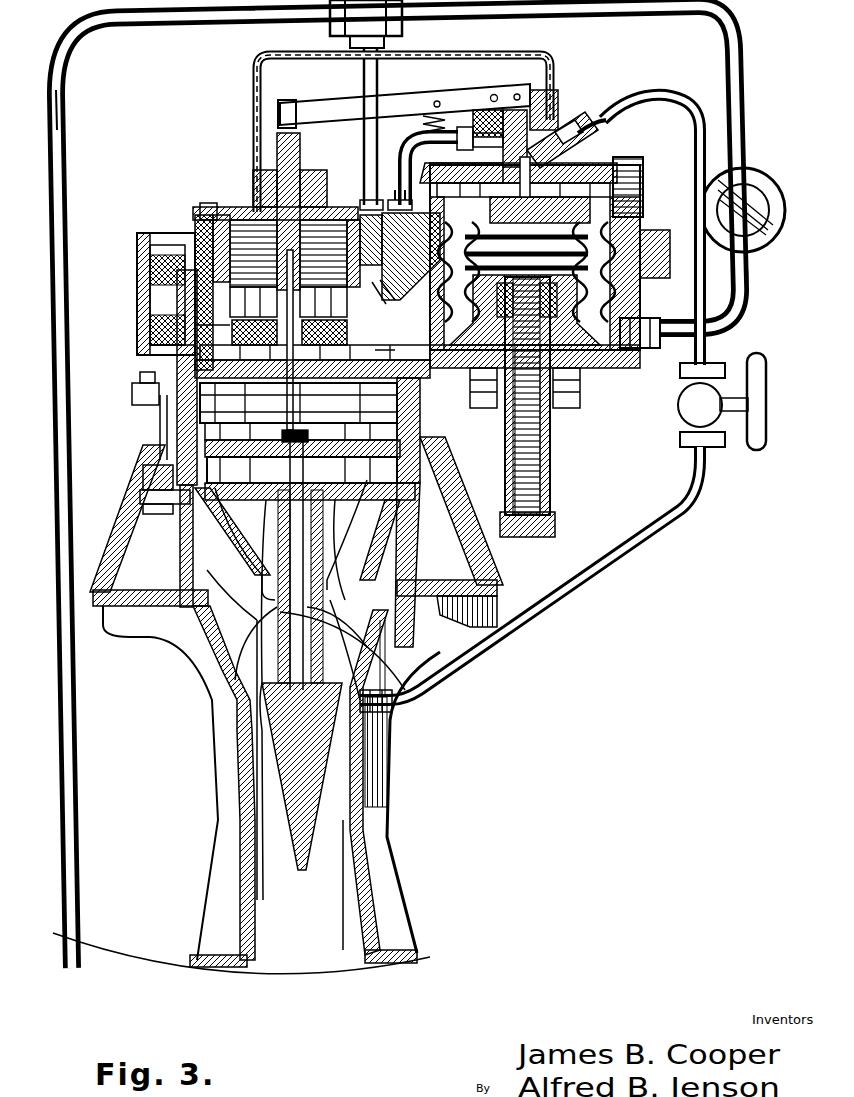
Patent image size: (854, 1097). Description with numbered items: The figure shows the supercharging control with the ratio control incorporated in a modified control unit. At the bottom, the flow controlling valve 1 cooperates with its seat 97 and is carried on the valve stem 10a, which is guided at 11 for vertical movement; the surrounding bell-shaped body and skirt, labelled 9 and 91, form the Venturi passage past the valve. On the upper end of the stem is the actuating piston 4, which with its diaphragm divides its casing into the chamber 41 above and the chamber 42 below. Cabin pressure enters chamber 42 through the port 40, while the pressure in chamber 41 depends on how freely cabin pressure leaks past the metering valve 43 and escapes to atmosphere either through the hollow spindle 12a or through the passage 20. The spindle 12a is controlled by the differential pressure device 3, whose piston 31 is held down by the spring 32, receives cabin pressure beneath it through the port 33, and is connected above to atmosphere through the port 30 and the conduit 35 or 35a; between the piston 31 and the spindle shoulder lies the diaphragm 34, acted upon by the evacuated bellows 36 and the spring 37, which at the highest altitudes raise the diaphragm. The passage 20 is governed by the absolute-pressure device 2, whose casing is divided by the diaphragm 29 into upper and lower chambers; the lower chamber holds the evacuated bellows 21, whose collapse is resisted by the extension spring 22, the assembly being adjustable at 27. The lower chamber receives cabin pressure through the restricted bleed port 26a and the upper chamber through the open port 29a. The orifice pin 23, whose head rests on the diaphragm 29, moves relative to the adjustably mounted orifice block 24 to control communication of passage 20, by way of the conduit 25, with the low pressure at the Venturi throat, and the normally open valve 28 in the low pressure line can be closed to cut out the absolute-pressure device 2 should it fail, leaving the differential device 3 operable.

The valve 1 is at (275, 708).
The absolute-pressure device 2 is at (611, 366).
The differential pressure device 3 is at (226, 205).
The actuating piston 4 is at (180, 446).
The bell body 9 is at (165, 955).
The valve stem 10a is at (420, 705).
The guide 11 is at (312, 522).
The spindle 12a is at (172, 428).
The passage 20 is at (385, 355).
The evacuated bellows 21 is at (636, 312).
The extension spring 22 is at (622, 350).
The orifice pin 23 is at (565, 128).
The orifice block 24 is at (555, 112).
The conduit 25 is at (676, 108).
The restricted bleed port 26a is at (742, 295).
The adjustment 27 is at (508, 462).
The valve 28 is at (718, 428).
The diaphragm 29 is at (643, 185).
The open port 29a is at (615, 110).
The port 30 is at (358, 225).
The piston 31 is at (168, 345).
The spring 32 is at (200, 212).
The port 33 is at (200, 325).
The diaphragm 34 is at (185, 240).
The conduit 35 is at (748, 78).
The conduit 35a is at (67, 122).
The evacuated bellows 36 is at (385, 300).
The spring 37 is at (140, 268).
The port 40 is at (185, 470).
The chamber 41 is at (298, 403).
The chamber 42 is at (302, 470).
The metering valve 43 is at (150, 375).
The bell skirt 91 is at (325, 970).
The seat 97 is at (245, 660).